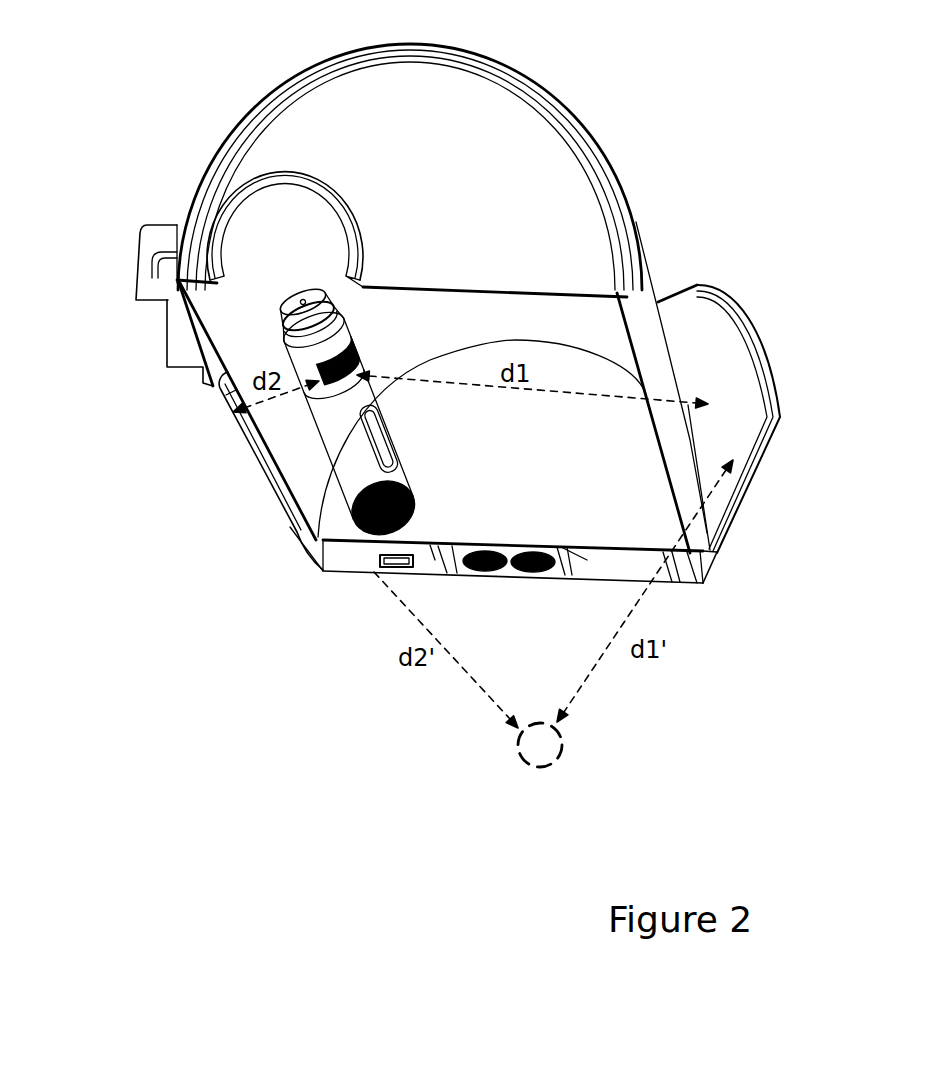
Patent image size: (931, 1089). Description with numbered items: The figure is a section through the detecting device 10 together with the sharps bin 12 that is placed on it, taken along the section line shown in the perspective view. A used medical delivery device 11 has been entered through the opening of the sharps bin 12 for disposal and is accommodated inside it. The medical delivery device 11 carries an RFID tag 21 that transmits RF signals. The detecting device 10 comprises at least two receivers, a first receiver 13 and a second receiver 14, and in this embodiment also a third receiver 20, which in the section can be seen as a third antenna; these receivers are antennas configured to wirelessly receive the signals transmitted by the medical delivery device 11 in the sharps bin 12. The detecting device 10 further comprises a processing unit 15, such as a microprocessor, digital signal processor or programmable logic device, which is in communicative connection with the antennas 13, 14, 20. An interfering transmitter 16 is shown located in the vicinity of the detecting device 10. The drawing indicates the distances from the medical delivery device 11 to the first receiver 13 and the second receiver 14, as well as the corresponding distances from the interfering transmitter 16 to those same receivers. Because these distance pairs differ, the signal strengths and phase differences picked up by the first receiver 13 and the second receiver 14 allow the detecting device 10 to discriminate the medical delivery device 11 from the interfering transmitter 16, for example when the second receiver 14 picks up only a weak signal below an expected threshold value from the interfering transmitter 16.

The detecting device 10 is at (567, 583).
The medical delivery device 11 is at (303, 297).
The sharps bin 12 is at (552, 146).
The first receiver 13 is at (240, 458).
The second receiver 14 is at (736, 372).
The processing unit 15 is at (376, 570).
The interfering transmitter 16 is at (528, 770).
The third receiver 20 is at (140, 296).
The RFID tag 21 is at (354, 359).